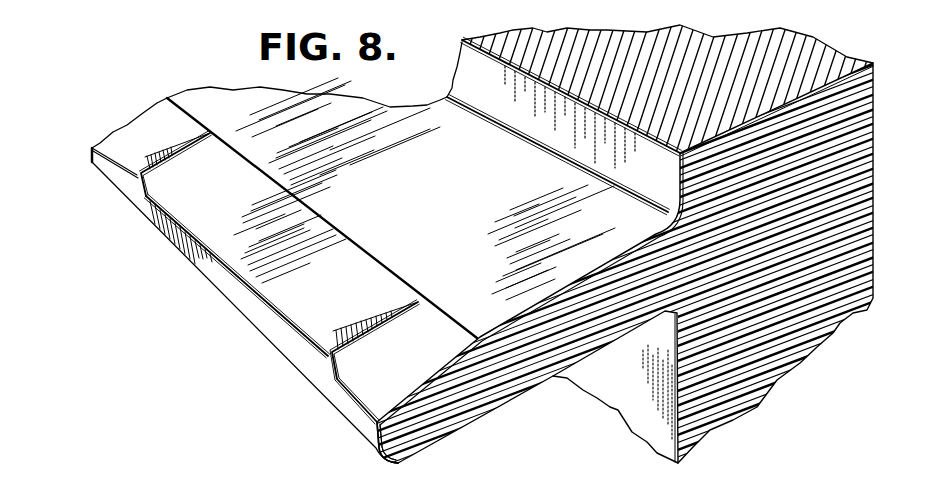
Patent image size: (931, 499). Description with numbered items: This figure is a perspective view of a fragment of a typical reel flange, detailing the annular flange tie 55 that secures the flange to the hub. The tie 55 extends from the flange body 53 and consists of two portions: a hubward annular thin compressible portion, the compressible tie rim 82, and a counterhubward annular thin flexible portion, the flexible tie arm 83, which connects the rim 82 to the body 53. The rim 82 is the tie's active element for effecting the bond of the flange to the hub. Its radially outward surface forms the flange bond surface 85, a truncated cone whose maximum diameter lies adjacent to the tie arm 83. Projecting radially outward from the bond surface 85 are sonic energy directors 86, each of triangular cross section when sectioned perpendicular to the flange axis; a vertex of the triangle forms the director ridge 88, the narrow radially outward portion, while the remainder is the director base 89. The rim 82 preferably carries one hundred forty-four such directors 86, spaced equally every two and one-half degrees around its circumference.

The flange body 53 is at (797, 350).
The annular flange tie 55 is at (528, 373).
The compressible tie rim 82 is at (424, 437).
The flexible tie arm 83 is at (597, 342).
The flange bond surface 85 is at (341, 277).
The sonic energy director 86 is at (136, 181).
The director ridge 88 is at (146, 177).
The director base 89 is at (153, 180).